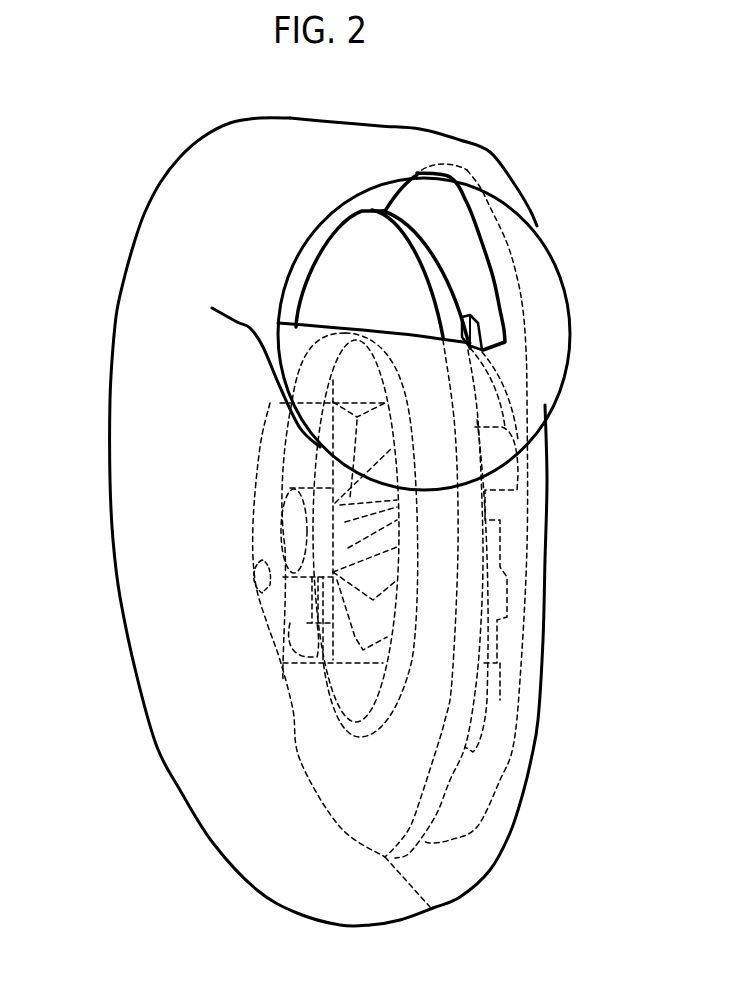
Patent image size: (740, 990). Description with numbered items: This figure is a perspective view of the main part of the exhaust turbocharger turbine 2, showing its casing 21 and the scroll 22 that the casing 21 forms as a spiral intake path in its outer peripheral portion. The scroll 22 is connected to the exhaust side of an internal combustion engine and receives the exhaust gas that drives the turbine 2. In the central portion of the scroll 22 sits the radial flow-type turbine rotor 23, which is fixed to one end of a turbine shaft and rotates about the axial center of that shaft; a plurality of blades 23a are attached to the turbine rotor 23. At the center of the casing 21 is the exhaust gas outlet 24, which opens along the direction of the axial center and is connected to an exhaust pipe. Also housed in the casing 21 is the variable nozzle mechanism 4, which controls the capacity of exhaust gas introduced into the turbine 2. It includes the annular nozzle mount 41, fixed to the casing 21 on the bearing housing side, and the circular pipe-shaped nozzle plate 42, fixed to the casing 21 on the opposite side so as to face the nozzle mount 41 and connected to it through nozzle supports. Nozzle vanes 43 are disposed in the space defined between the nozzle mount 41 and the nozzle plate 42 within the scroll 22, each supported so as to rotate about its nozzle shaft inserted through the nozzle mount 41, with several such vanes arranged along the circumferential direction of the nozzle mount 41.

The exhaust turbocharger turbine 2 is at (622, 112).
The casing 21 is at (534, 146).
The scroll 22 is at (393, 124).
The nozzle mount 41 is at (432, 201).
The nozzle plate 42 is at (368, 241).
The nozzle vane 43 is at (478, 329).
The turbine rotor 23 is at (306, 527).
The blades 23a is at (330, 623).
The exhaust gas outlet 24 is at (257, 593).
The variable nozzle mechanism 4 is at (492, 762).